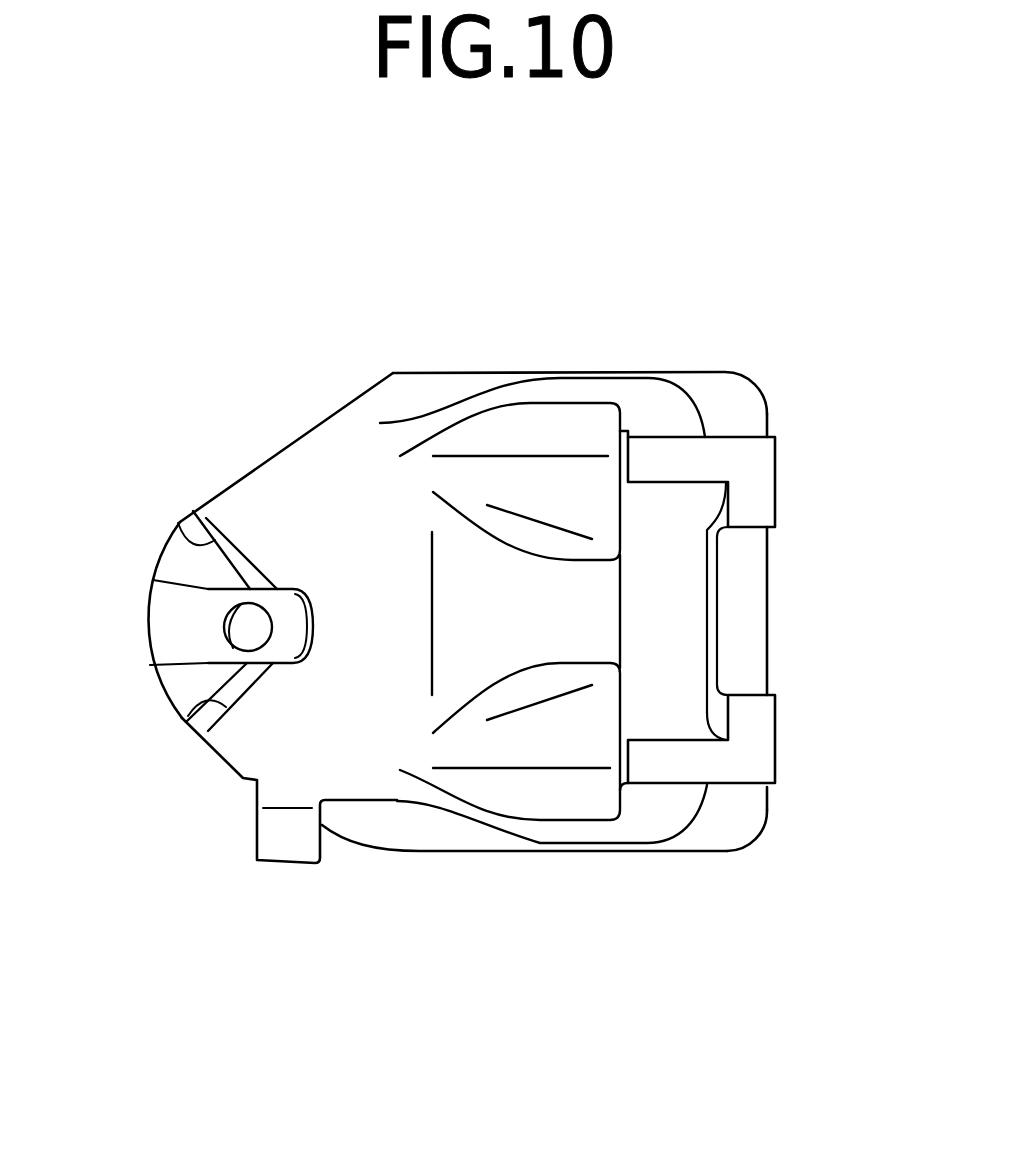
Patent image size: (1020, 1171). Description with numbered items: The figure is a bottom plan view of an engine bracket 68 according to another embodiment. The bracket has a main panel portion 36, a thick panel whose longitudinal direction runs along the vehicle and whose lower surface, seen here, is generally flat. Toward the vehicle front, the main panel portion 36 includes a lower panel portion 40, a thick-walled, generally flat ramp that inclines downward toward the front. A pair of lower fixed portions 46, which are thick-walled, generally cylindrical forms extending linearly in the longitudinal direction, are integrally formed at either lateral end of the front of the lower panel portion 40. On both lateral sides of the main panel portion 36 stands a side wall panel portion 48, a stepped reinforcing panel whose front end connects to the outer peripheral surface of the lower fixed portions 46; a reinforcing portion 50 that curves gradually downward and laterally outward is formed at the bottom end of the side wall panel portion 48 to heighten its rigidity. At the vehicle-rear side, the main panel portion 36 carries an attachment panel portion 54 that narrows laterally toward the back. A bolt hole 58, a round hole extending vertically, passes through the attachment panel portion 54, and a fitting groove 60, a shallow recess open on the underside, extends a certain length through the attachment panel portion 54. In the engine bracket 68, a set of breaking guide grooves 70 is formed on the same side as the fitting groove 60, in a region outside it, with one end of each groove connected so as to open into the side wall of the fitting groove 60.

The main panel portion 36 is at (368, 742).
The lower panel portion 40 is at (672, 715).
The lower fixed portions 46 is at (753, 468).
The side wall panel portion 48 is at (723, 402).
The reinforcing portion 50 is at (597, 393).
The attachment panel portion 54 is at (253, 495).
The bolt hole 58 is at (223, 630).
The fitting groove 60 is at (152, 663).
The engine bracket 68 is at (782, 305).
The breaking guide grooves 70 is at (185, 537).